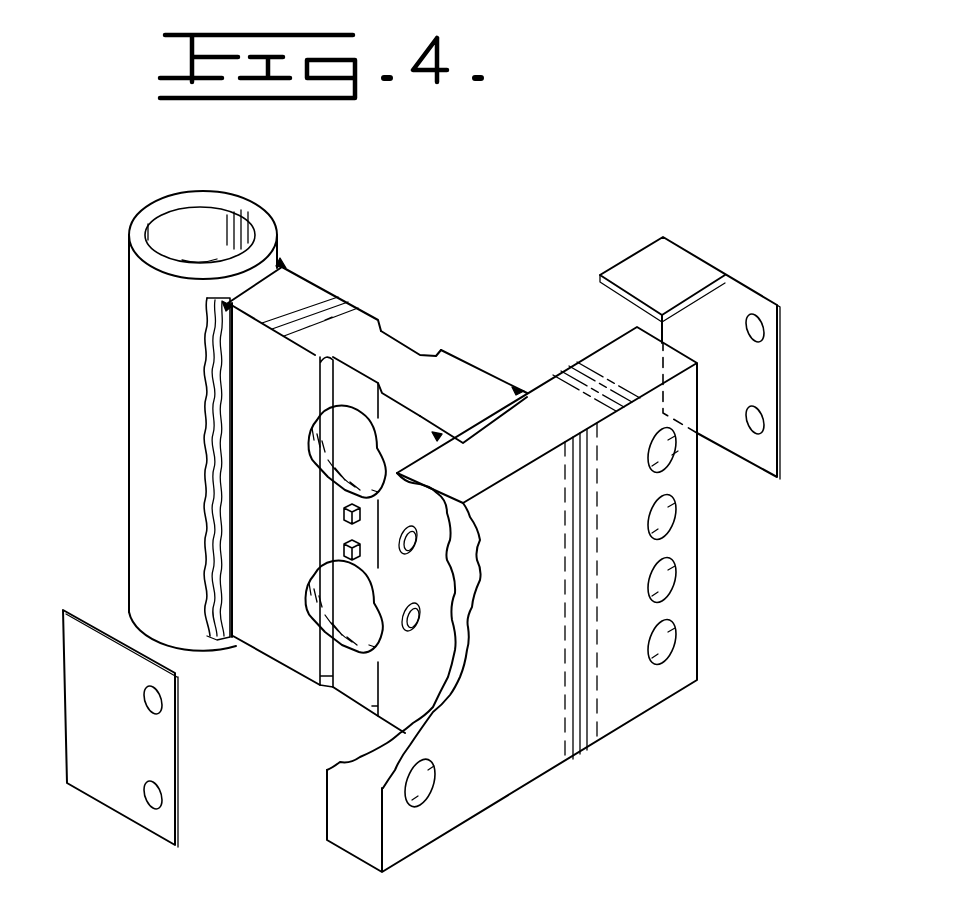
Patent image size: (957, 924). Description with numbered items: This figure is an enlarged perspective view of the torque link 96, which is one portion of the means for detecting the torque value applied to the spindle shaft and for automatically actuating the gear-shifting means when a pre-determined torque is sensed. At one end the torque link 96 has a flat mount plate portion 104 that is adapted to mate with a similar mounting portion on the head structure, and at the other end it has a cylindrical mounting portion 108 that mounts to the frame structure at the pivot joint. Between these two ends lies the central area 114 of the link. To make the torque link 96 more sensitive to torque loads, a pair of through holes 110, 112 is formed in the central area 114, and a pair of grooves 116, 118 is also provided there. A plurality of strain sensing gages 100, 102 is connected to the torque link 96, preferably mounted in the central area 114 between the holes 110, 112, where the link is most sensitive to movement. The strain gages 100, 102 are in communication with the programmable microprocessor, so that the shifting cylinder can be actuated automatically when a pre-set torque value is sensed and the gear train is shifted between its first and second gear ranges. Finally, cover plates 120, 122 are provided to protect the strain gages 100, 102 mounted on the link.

The torque link 96 is at (343, 280).
The strain sensing gage 100 is at (345, 512).
The strain sensing gage 102 is at (345, 548).
The flat mount plate portion 104 is at (538, 661).
The cylindrical mounting portion 108 is at (138, 435).
The through hole 110 is at (316, 440).
The through hole 112 is at (313, 601).
The central area 114 is at (403, 338).
The groove 116 is at (318, 362).
The groove 118 is at (437, 351).
The cover plate 120 is at (132, 757).
The cover plate 122 is at (736, 283).